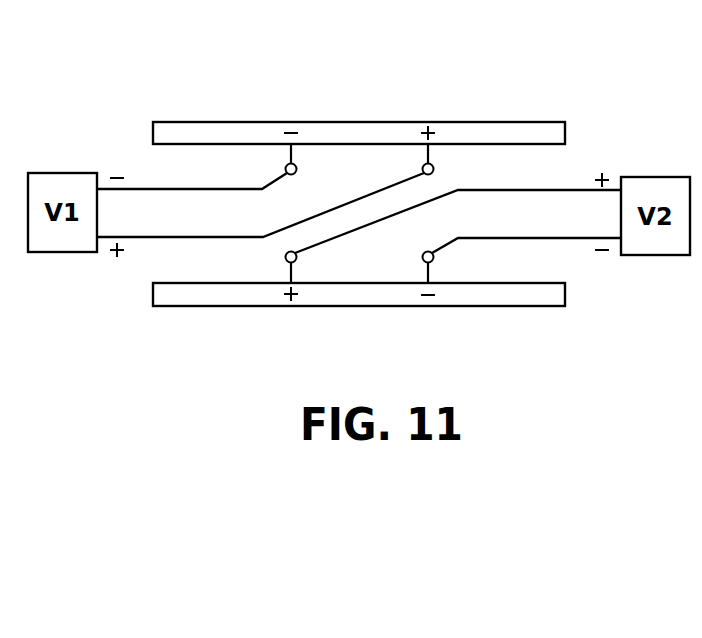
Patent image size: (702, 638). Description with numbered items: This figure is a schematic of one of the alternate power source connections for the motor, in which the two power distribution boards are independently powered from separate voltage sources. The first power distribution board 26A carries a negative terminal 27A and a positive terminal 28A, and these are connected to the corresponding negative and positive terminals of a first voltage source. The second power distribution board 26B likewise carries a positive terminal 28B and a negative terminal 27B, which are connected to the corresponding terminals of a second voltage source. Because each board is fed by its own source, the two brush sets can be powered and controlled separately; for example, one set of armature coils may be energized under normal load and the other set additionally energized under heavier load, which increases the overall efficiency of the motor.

The first power distribution board 26A is at (565, 134).
The second power distribution board 26B is at (565, 297).
The negative terminal of first board 27A is at (286, 166).
The negative terminal of second board 27B is at (434, 259).
The positive terminal of first board 28A is at (433, 167).
The positive terminal of second board 28B is at (286, 260).